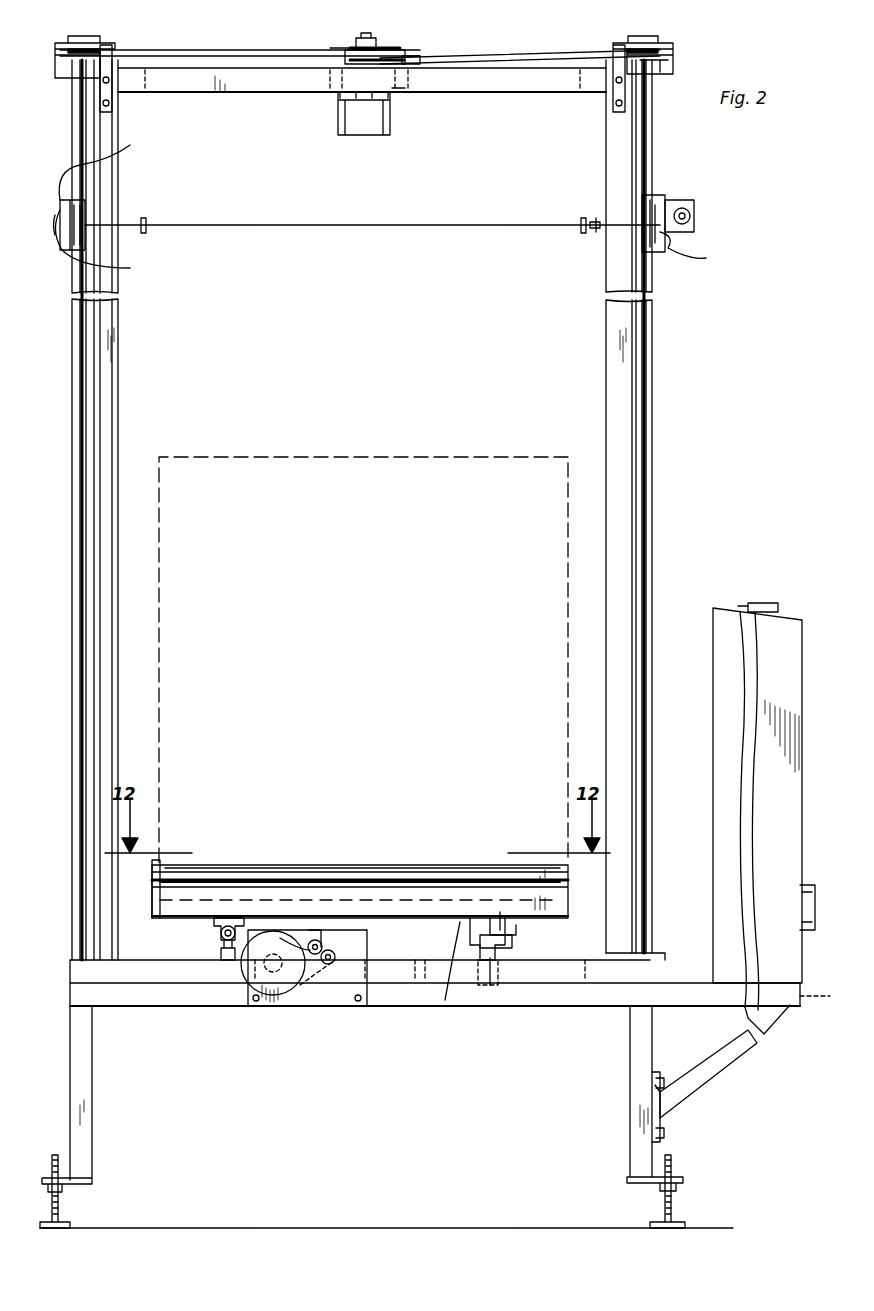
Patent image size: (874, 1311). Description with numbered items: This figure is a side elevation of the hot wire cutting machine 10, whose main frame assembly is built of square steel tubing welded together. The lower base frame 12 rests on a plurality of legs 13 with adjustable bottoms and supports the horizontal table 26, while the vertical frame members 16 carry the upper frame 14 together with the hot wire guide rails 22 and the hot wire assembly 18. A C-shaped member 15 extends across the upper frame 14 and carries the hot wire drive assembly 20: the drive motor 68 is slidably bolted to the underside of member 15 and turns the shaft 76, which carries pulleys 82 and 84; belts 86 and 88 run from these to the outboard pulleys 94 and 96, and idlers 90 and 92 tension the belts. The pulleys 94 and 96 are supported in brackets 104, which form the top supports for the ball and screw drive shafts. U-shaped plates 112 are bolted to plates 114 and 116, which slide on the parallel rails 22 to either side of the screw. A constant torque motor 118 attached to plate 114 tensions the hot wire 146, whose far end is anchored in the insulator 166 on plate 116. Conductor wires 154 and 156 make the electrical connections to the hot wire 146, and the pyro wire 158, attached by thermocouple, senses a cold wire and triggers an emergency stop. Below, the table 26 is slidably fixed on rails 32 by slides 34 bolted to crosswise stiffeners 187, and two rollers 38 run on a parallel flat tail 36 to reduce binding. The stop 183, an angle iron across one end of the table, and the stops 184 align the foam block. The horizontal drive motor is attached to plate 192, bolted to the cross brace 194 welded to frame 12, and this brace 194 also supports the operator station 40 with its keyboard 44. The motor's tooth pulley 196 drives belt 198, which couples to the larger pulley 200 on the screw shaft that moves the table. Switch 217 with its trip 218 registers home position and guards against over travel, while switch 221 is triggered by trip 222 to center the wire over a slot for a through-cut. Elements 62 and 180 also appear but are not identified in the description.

The hot wire cutting machine 10 is at (704, 158).
The lower base frame 12 is at (590, 1006).
The legs 13 is at (88, 1054).
The upper frame 14 is at (462, 88).
The C-shaped member 15 is at (400, 92).
The vertical frame members 16 is at (118, 348).
The hot wire assembly 18 is at (690, 188).
The hot wire drive assembly 20 is at (345, 40).
The hot wire guide rails 22 is at (84, 322).
The horizontal table 26 is at (409, 873).
The rails 32 is at (220, 948).
The slides 34 is at (220, 935).
The parallel flat tail 36 is at (490, 985).
The rollers 38 is at (492, 918).
The operator station 40 is at (798, 600).
The keyboard 44 is at (756, 603).
The bracket 62 is at (808, 930).
The drive motor 68 is at (364, 122).
The shaft 76 is at (374, 34).
The pulley 82 is at (395, 56).
The pulley 84 is at (380, 48).
The belt 86 is at (530, 54).
The belt 88 is at (230, 52).
The idler 90 is at (416, 54).
The idler 92 is at (338, 46).
The pulley 94 is at (660, 62).
The pulley 96 is at (70, 43).
The brackets 104 is at (108, 44).
The plates 112 is at (660, 196).
The plate 114 is at (699, 250).
The plate 116 is at (108, 240).
The constant torque motor 118 is at (700, 214).
The hot wire 146 is at (386, 233).
The conductor wire 154 is at (590, 200).
The conductor wire 156 is at (144, 218).
The pyro wire 158 is at (598, 218).
The insulator 166 is at (110, 167).
The platform rail 180 is at (318, 884).
The stop 183 is at (280, 840).
The stops 184 is at (160, 866).
The stiffeners 187 is at (445, 1000).
The plate 192 is at (360, 960).
The cross brace 194 is at (683, 982).
The tooth pulley 196 is at (330, 950).
The belt 198 is at (312, 940).
The pulley 200 is at (268, 990).
The switch 217 is at (514, 942).
The trip 218 is at (512, 930).
The switch 221 is at (488, 960).
The trip 222 is at (500, 912).